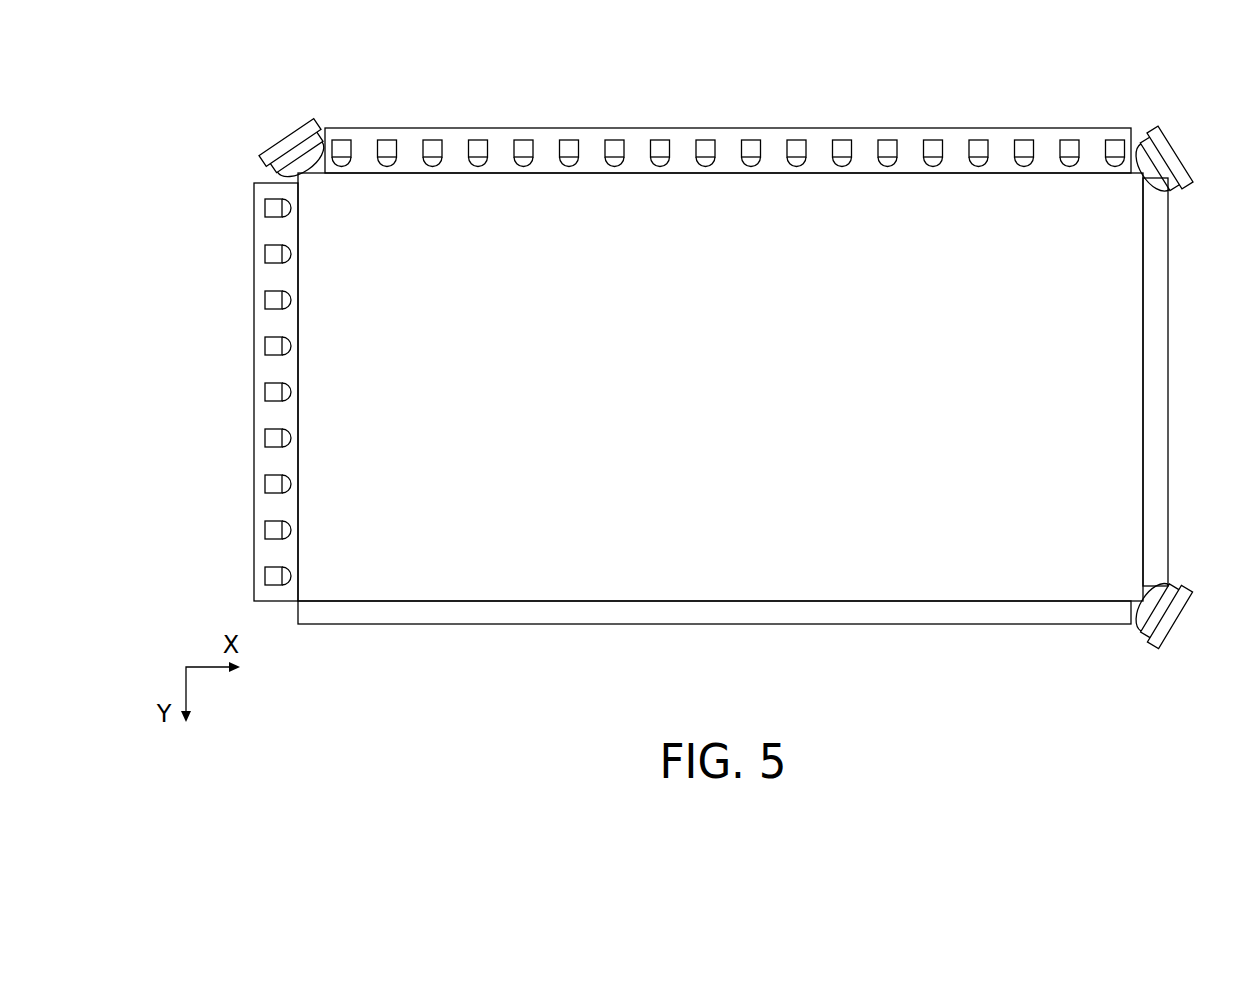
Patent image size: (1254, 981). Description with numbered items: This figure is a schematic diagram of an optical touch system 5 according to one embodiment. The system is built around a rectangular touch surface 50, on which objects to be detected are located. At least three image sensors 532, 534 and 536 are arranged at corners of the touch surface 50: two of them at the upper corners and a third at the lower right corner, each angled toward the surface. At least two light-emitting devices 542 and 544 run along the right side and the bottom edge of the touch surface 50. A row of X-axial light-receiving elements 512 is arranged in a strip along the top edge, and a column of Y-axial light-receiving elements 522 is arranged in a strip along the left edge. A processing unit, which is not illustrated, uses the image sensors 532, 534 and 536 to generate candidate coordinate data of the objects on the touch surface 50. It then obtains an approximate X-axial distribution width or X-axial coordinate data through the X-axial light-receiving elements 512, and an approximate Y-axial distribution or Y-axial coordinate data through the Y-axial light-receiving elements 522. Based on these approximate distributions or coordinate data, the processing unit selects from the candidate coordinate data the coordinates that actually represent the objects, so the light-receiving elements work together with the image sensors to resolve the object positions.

The optical touch system 5 is at (186, 62).
The touch surface 50 is at (1096, 297).
The X-axial light-receiving elements 512 is at (750, 150).
The Y-axial light-receiving elements 522 is at (268, 391).
The image sensor 532 is at (290, 135).
The image sensor 534 is at (1172, 158).
The image sensor 536 is at (1172, 617).
The light-emitting device 542 is at (1157, 405).
The light-emitting device 544 is at (722, 612).